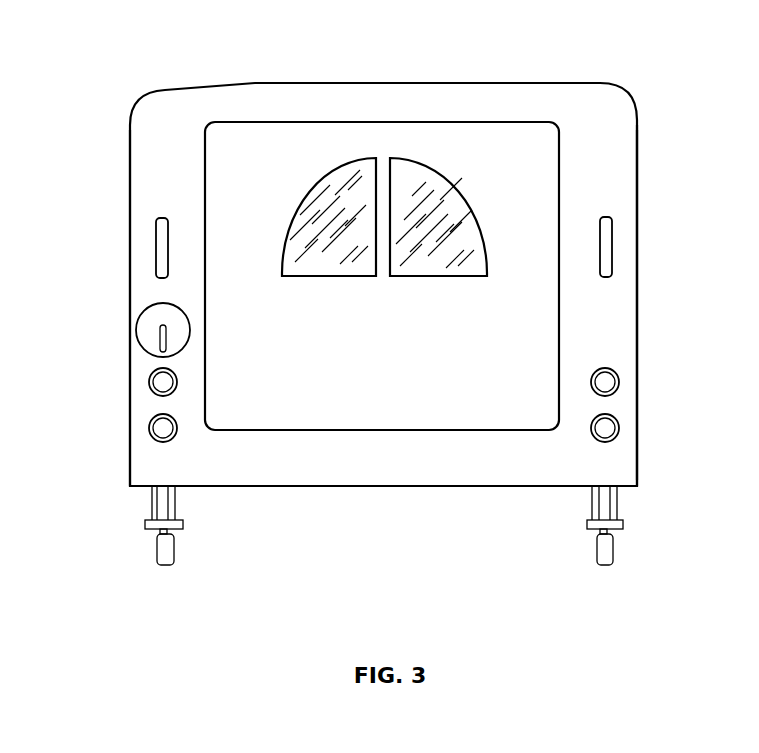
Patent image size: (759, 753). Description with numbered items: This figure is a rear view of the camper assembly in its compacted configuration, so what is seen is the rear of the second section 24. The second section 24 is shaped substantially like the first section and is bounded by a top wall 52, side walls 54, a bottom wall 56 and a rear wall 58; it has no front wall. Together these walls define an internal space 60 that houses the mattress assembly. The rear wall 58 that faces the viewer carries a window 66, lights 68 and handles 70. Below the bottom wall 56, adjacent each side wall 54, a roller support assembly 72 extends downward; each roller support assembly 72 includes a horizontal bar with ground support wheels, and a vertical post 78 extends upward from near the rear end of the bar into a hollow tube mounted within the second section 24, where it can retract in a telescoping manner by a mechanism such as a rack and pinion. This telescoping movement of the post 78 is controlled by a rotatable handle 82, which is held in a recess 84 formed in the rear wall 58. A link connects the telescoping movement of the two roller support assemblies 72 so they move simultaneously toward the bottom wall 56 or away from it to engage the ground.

The second section 24 is at (626, 149).
The top wall 52 is at (312, 82).
The side walls 54 is at (130, 462).
The bottom wall 56 is at (380, 487).
The rear wall 58 is at (622, 195).
The internal space 60 is at (600, 322).
The window 66 is at (350, 183).
The lights 68 is at (610, 382).
The handles 70 is at (156, 250).
The roller support assembly 72 is at (183, 571).
The vertical post 78 is at (612, 503).
The rotatable handle 82 is at (160, 335).
The recess 84 is at (140, 320).